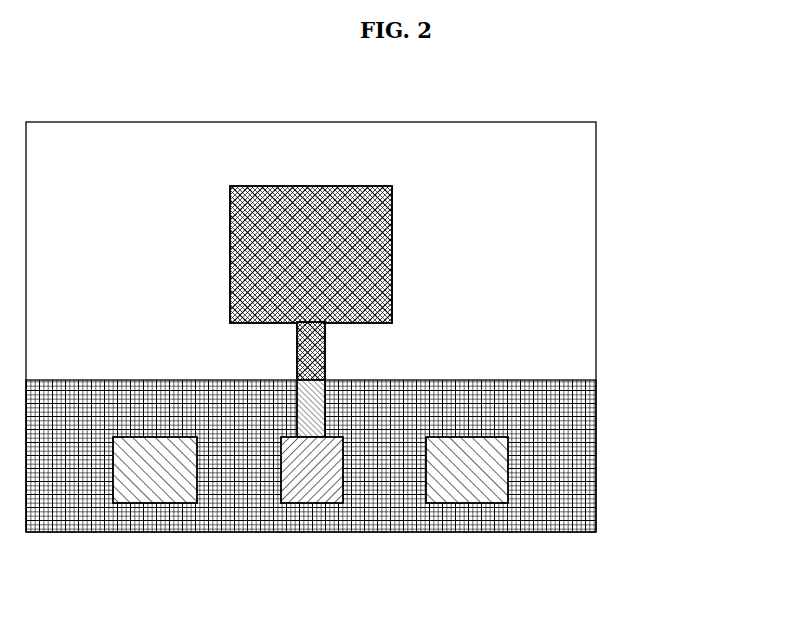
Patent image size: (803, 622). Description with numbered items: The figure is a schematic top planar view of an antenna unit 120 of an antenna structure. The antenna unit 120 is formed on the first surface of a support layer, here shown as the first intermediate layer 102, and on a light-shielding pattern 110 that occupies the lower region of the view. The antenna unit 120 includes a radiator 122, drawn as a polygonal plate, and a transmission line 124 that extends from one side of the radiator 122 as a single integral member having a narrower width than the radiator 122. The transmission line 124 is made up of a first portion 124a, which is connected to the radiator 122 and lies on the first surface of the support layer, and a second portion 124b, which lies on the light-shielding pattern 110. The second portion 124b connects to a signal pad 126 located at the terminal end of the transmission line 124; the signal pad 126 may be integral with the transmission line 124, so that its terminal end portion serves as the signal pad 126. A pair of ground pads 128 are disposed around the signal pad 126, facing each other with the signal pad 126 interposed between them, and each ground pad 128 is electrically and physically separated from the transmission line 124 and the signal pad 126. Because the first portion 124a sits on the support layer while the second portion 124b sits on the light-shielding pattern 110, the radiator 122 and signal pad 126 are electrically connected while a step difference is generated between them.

The first intermediate layer 102 is at (583, 168).
The light-shielding pattern 110 is at (585, 507).
The antenna unit 120 is at (497, 248).
The radiator 122 is at (373, 267).
The transmission line 124 is at (531, 379).
The first portion 124a is at (327, 352).
The second portion 124b is at (318, 413).
The signal pad 126 is at (305, 503).
The ground pad 128 is at (153, 487).